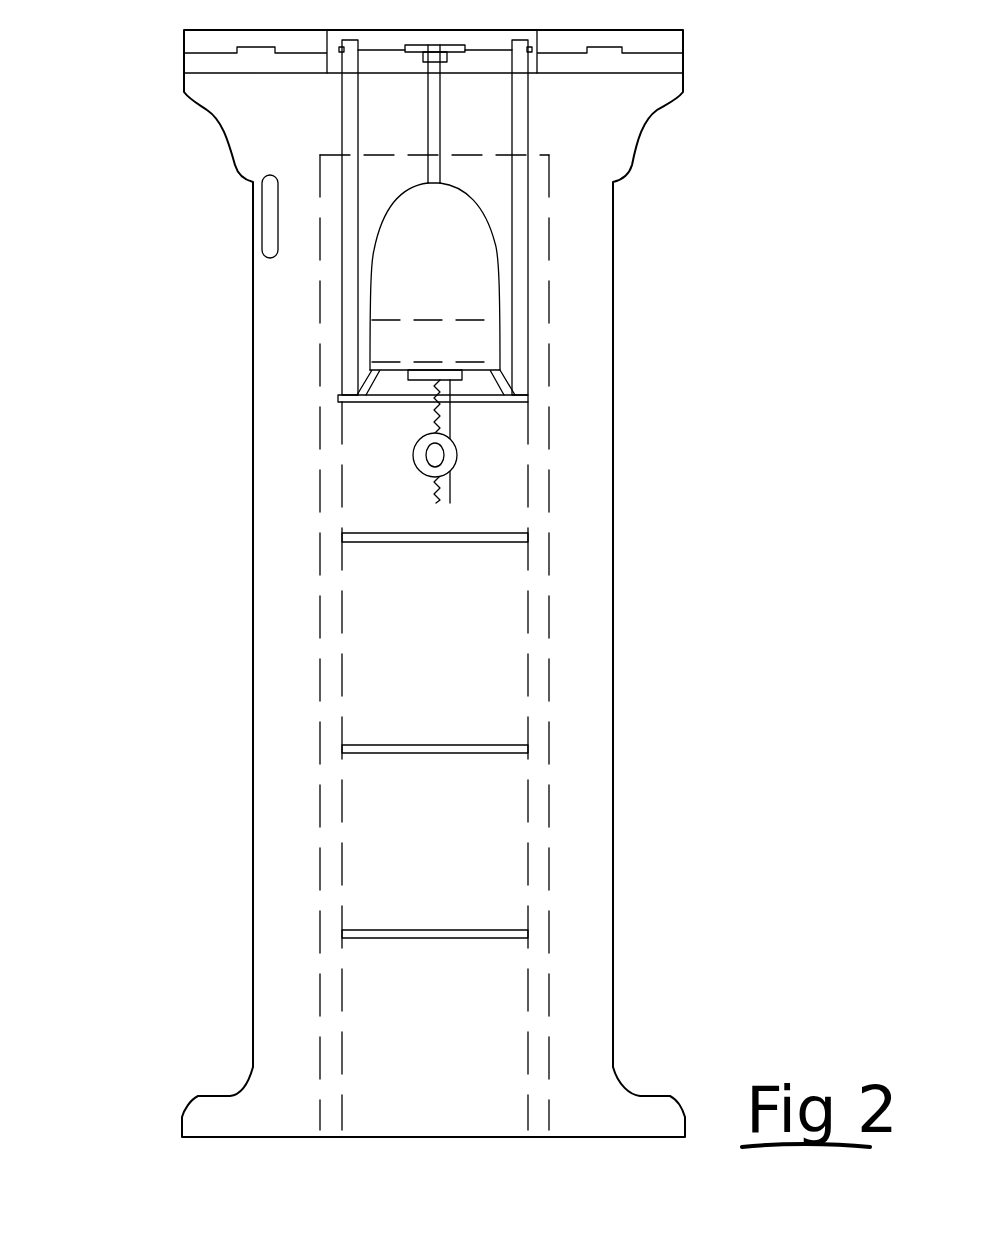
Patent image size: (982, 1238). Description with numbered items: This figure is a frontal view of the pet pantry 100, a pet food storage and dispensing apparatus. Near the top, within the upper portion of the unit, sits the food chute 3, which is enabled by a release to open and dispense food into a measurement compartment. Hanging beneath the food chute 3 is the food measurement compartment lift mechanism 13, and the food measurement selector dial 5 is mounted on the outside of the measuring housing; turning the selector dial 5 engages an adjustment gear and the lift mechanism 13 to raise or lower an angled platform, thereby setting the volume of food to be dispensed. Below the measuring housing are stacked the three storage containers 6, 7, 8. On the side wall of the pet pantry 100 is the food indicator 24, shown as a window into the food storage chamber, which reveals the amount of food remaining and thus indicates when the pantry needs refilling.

The pet pantry 100 is at (731, 84).
The food indicator 24 is at (268, 218).
The food chute 3 is at (480, 296).
The food measurement compartment lift mechanism 13 is at (440, 422).
The food measurement selector dial 5 is at (420, 462).
The storage container 6 is at (435, 612).
The storage container 7 is at (435, 823).
The storage container 8 is at (435, 969).